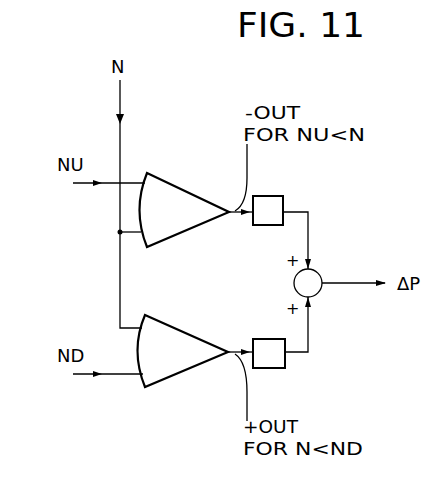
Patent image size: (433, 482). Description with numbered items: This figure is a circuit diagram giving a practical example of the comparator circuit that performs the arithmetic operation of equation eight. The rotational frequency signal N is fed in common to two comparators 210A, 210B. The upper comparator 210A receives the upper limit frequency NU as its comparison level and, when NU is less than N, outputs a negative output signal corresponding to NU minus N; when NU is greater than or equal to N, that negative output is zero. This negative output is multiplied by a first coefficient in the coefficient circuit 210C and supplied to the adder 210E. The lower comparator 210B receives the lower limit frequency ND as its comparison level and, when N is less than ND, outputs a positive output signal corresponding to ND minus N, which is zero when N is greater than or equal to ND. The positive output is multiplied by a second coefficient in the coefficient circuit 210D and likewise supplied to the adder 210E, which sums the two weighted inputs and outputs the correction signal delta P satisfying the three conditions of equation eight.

The comparator 210A is at (165, 173).
The comparator 210B is at (164, 315).
The coefficient circuit 210C is at (269, 196).
The coefficient circuit 210D is at (265, 368).
The adder 210E is at (318, 294).